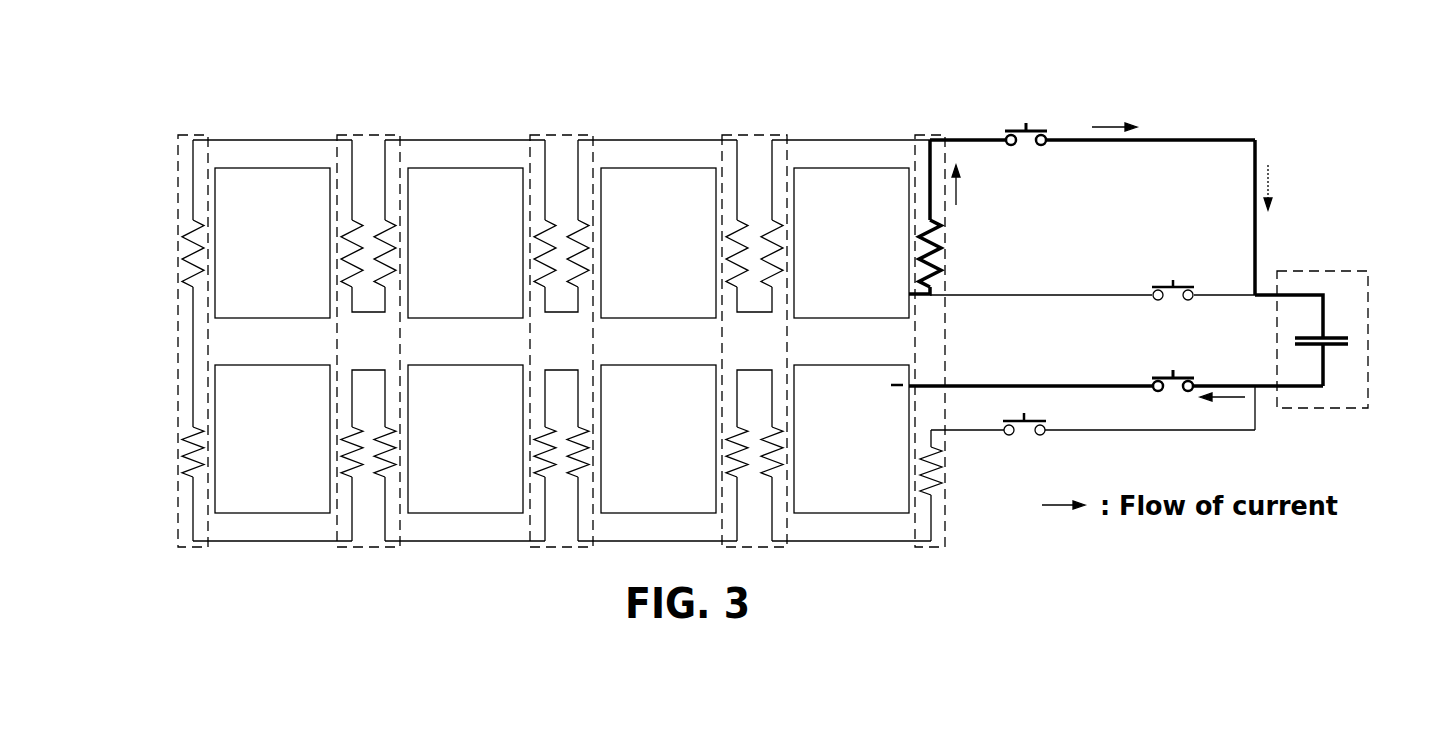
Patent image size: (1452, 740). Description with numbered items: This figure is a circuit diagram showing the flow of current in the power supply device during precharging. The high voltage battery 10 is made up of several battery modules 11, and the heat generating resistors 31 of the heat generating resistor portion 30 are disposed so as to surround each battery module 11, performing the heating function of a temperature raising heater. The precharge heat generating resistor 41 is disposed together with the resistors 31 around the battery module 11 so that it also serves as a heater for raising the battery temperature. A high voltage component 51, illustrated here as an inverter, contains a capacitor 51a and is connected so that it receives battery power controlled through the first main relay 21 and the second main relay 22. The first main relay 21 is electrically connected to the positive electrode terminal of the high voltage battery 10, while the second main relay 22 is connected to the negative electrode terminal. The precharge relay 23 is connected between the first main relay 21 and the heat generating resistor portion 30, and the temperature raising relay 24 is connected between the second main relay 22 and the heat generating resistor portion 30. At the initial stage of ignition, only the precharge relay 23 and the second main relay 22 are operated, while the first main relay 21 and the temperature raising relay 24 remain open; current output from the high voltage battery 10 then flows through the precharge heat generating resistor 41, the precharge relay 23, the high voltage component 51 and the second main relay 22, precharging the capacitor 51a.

The high voltage battery 10 is at (562, 273).
The battery module 11 is at (829, 168).
The first main relay 21 is at (1157, 285).
The second main relay 22 is at (1158, 378).
The precharge relay 23 is at (1015, 128).
The temperature raising relay 24 is at (1035, 420).
The heat generating resistor portion 30 is at (535, 132).
The heat generating resistor 31 is at (183, 248).
The precharge heat generating resistor 41 is at (942, 263).
The high voltage component 51 is at (1344, 309).
The capacitor 51a is at (1338, 335).